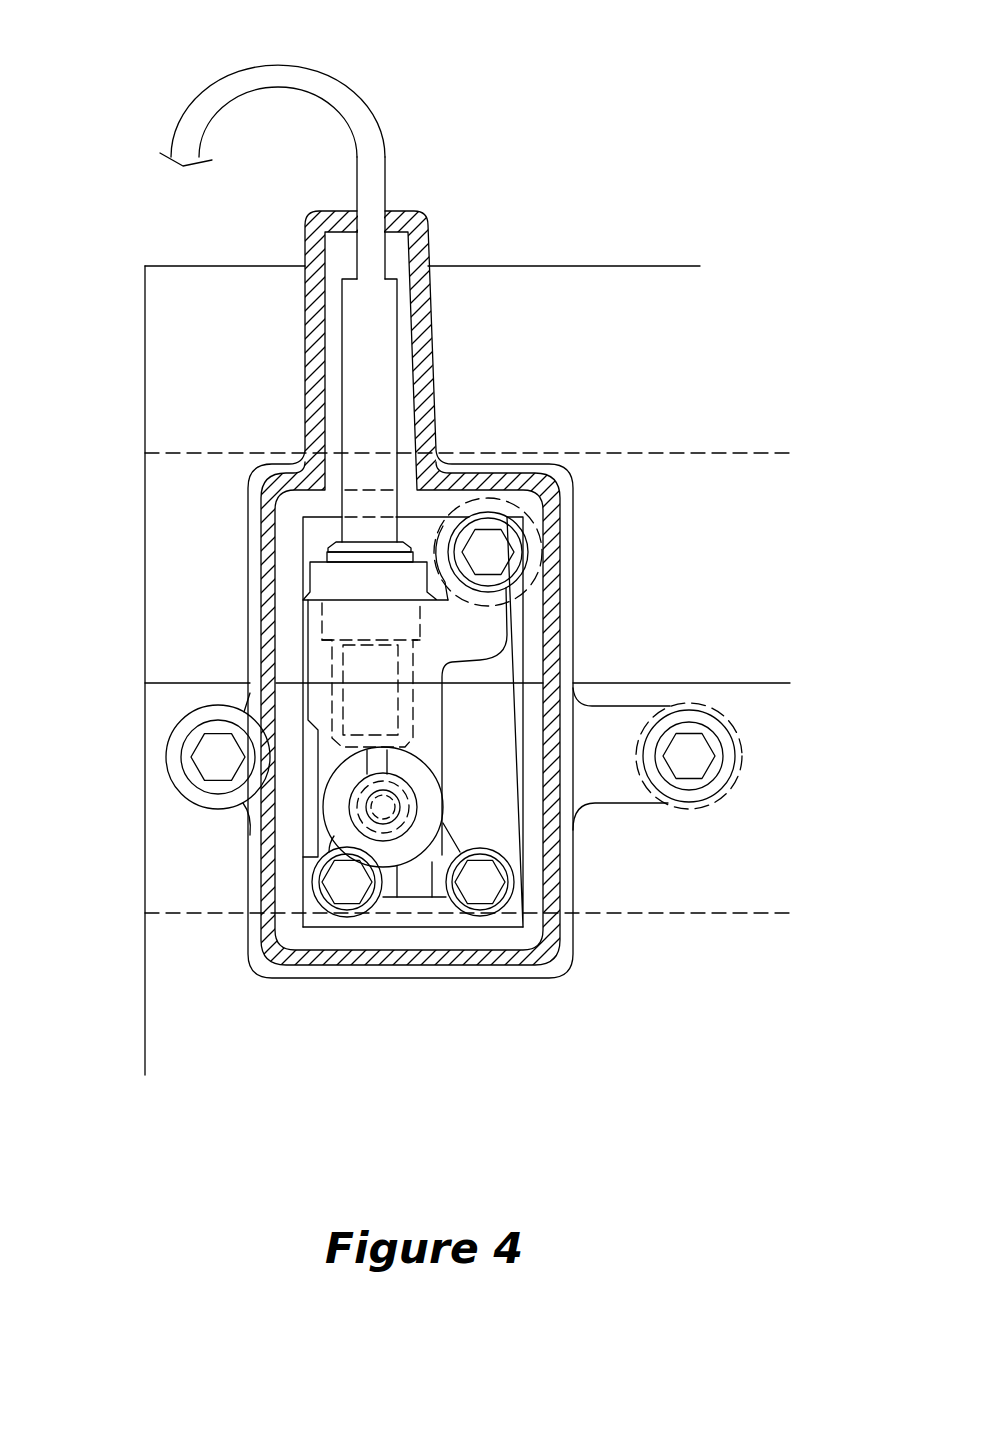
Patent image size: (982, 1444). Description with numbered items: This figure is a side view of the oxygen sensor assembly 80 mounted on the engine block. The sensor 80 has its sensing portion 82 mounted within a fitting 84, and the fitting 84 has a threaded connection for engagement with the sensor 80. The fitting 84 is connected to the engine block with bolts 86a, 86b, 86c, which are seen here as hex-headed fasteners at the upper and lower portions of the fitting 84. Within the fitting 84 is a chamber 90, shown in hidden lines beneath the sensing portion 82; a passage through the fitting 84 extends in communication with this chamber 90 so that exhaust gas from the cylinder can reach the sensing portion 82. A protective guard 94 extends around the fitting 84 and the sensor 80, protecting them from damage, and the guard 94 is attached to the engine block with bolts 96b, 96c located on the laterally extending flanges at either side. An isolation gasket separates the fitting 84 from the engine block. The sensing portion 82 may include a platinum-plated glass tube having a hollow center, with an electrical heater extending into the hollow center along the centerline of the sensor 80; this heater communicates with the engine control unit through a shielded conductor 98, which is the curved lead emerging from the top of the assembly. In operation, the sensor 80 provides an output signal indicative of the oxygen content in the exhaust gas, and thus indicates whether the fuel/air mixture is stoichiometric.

The sensor assembly 80 is at (452, 119).
The sensing portion 82 is at (363, 667).
The fitting 84 is at (470, 691).
The bolt 86a is at (497, 540).
The bolt 86b is at (475, 883).
The bolt 86c is at (352, 888).
The chamber 90 is at (405, 710).
The protective guard 94 is at (515, 590).
The bolt 96b is at (688, 755).
The bolt 96c is at (210, 762).
The shielded conductor 98 is at (328, 75).